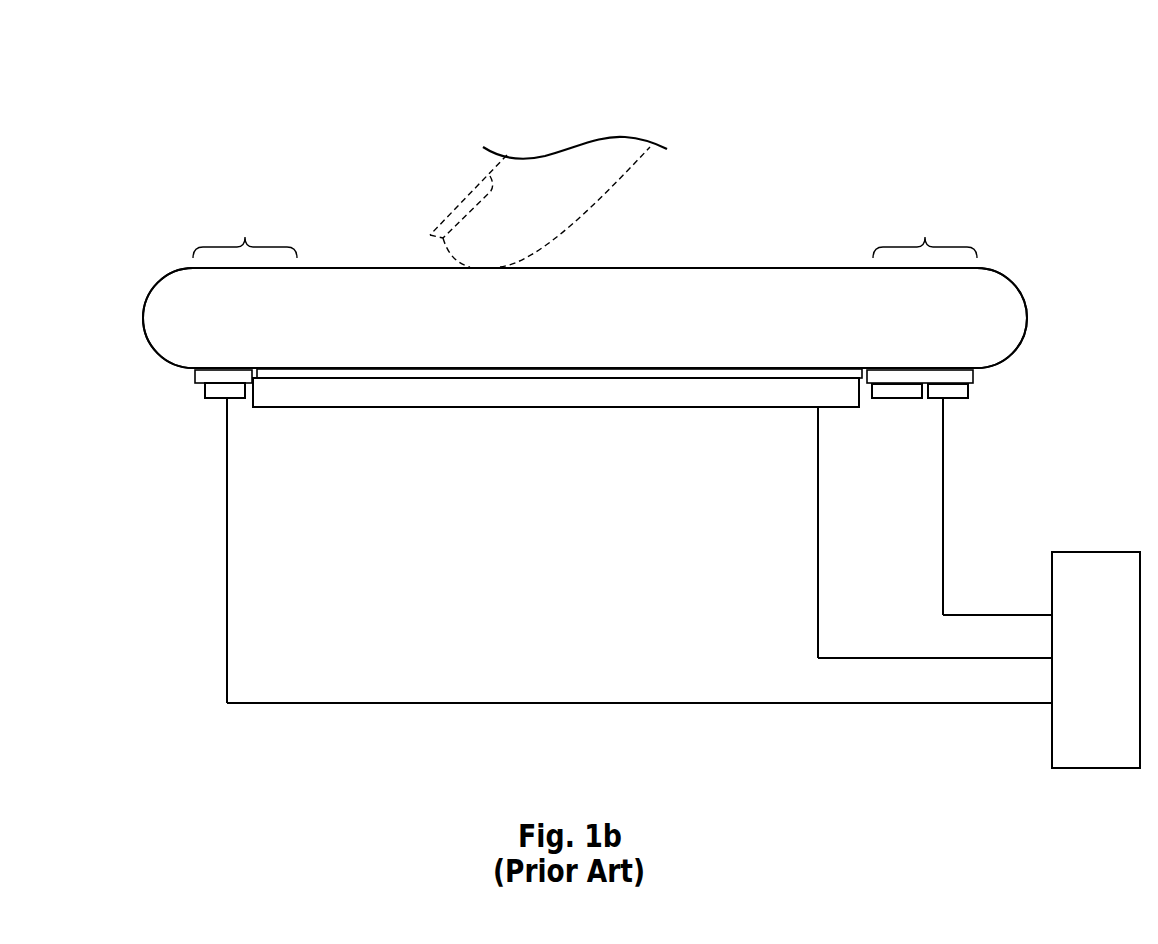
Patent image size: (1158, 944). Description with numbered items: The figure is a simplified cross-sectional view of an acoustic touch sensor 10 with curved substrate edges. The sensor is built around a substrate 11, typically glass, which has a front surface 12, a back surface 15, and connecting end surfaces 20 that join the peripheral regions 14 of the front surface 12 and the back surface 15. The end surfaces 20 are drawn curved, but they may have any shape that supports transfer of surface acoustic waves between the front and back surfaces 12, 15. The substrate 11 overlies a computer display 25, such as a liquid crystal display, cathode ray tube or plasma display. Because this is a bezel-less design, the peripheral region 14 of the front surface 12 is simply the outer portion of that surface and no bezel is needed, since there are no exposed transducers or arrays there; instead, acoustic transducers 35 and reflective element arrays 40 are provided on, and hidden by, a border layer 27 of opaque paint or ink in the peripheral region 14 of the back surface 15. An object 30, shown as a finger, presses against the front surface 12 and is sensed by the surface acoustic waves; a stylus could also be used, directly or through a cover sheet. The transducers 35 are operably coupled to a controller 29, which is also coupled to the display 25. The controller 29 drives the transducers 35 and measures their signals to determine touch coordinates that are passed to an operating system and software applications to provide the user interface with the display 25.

The acoustic touch sensor 10 is at (168, 125).
The substrate 11 is at (781, 332).
The front surface 12 is at (343, 268).
The peripheral regions 14 is at (585, 231).
The back surface 15 is at (457, 370).
The connecting end surfaces 20 is at (143, 320).
The display 25 is at (653, 393).
The border layer 27 is at (195, 377).
The controller 29 is at (1111, 674).
The object 30 is at (580, 203).
The acoustic transducers 35 is at (217, 398).
The reflective element arrays 40 is at (897, 390).